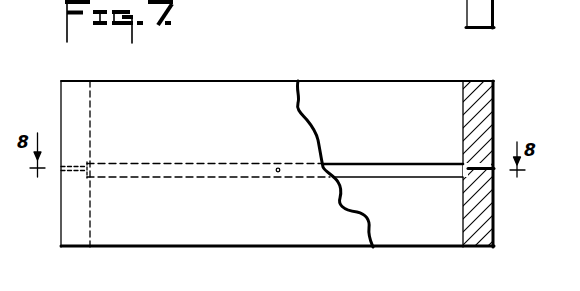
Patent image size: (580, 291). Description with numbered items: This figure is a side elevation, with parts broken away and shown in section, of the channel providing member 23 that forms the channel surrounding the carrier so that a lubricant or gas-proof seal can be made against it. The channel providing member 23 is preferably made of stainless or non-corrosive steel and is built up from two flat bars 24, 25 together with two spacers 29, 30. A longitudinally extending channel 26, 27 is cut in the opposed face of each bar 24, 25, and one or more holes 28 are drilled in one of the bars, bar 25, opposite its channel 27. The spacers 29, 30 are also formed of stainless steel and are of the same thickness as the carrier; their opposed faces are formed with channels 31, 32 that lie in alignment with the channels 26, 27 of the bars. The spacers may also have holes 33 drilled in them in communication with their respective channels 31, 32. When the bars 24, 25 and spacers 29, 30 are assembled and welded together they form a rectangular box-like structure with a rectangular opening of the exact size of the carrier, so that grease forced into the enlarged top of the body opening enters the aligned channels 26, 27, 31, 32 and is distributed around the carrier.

The channel providing member 23 is at (357, 85).
The flat bar 24 is at (440, 97).
The flat bar 25 is at (218, 93).
The channel 26 is at (373, 173).
The channel 27 is at (225, 170).
The hole 28 is at (278, 167).
The spacer 29 is at (73, 218).
The spacer 30 is at (483, 215).
The channel 31 is at (86, 178).
The channel 32 is at (467, 175).
The hole 33 is at (68, 170).